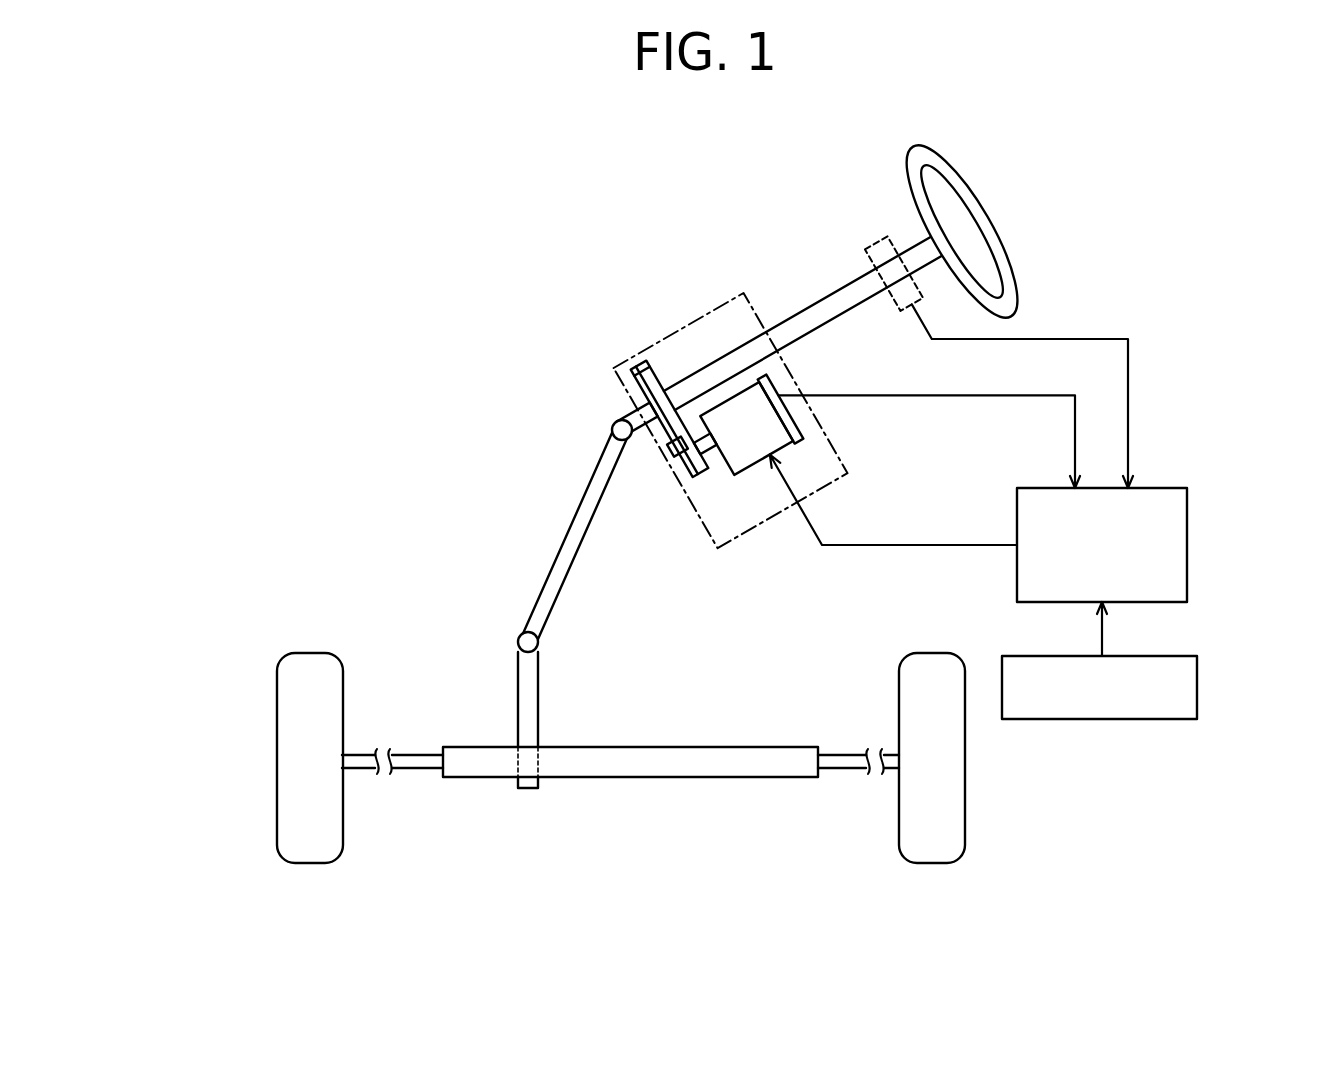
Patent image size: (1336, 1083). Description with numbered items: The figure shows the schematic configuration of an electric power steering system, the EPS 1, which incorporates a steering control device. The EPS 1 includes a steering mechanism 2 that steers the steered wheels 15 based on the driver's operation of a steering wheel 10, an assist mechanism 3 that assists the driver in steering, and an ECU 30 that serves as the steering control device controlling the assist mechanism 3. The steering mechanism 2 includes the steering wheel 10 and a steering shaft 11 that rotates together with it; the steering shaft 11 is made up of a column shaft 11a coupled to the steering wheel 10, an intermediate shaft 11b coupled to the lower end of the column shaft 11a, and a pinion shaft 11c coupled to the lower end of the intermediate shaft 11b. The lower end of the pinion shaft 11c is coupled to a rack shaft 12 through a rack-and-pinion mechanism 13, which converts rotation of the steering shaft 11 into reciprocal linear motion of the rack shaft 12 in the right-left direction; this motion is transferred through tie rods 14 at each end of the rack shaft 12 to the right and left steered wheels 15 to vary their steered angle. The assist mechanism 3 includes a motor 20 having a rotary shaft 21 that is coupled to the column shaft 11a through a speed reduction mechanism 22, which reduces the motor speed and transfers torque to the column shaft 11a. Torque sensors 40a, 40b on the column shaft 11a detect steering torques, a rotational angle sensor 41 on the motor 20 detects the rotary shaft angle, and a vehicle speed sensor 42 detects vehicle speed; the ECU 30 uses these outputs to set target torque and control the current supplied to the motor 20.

The EPS 1 is at (384, 162).
The steering mechanism 2 is at (396, 402).
The assist mechanism 3 is at (680, 328).
The steering wheel 10 is at (978, 204).
The steering shaft 11 is at (553, 383).
The column shaft 11a is at (613, 421).
The intermediate shaft 11b is at (578, 506).
The pinion shaft 11c is at (512, 657).
The rack shaft 12 is at (625, 778).
The rack-and-pinion mechanism 13 is at (487, 722).
The tie rods 14 is at (415, 771).
The steered wheels 15 is at (308, 864).
The motor 20 is at (738, 470).
The rotary shaft 21 is at (688, 455).
The speed reduction mechanism 22 is at (667, 438).
The ECU 30 is at (1017, 490).
The torque sensor 40a is at (817, 258).
The torque sensor 40b is at (876, 242).
The rotational angle sensor 41 is at (770, 378).
The vehicle speed sensor 42 is at (1197, 682).